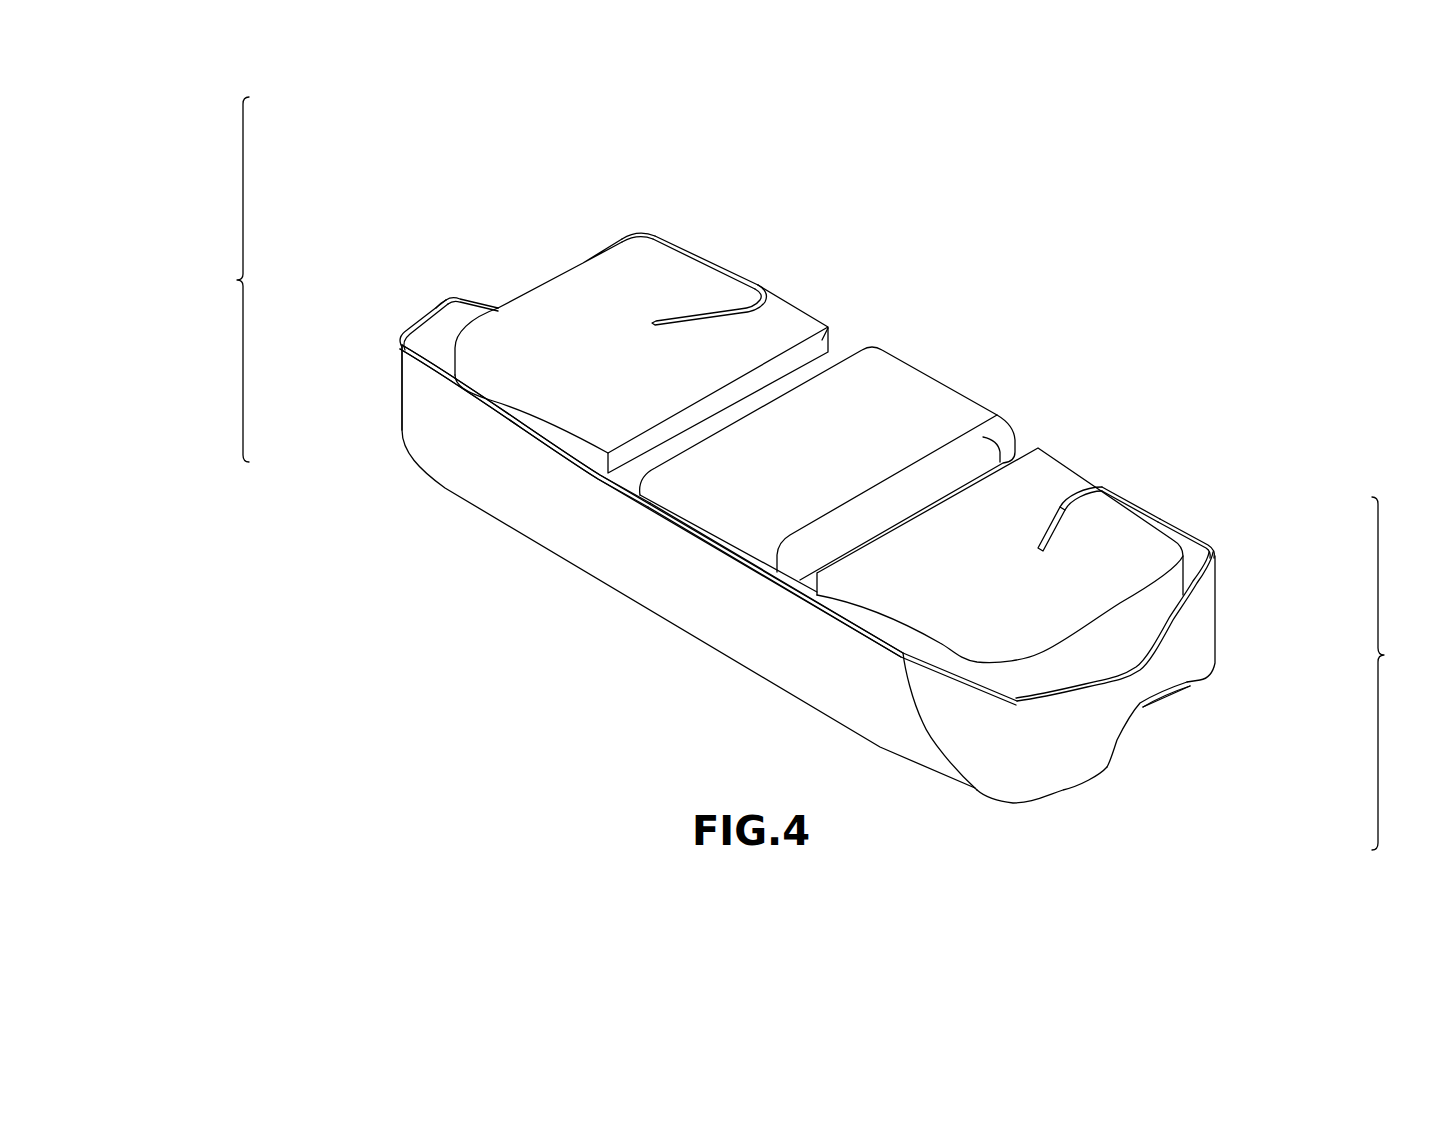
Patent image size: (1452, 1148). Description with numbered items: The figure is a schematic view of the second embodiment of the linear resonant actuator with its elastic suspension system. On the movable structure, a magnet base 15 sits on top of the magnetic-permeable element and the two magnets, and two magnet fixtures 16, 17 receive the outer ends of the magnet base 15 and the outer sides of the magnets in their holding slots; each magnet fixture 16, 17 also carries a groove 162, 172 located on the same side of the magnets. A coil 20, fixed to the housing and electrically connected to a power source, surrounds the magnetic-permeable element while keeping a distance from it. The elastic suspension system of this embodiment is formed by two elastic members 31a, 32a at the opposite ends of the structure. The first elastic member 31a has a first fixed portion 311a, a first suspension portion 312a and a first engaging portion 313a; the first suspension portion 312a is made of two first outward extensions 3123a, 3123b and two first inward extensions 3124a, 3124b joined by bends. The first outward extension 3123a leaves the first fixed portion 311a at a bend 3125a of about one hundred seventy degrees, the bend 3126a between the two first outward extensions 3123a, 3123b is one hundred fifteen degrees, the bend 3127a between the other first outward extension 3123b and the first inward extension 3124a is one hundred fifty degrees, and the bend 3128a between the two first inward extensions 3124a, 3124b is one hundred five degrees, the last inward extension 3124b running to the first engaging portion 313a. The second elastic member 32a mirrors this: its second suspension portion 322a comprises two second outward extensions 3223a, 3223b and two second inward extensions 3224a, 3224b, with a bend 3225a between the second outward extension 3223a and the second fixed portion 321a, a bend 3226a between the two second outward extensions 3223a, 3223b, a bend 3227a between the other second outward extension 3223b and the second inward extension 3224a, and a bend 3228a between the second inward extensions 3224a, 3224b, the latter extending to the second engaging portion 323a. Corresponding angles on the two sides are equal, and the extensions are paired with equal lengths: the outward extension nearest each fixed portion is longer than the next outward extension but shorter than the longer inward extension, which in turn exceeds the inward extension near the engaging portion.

The magnet base 15 is at (824, 354).
The magnet fixture 16 is at (818, 365).
The groove 162 is at (787, 332).
The magnet fixture 17 is at (1042, 487).
The groove 172 is at (1060, 500).
The coil 20 is at (920, 397).
The first fixing seat 31a is at (250, 488).
The first fixed portion 311a is at (505, 486).
The first suspension portion 312a is at (472, 302).
The first engaging portion 313a is at (750, 287).
The first outward extension 3123a is at (437, 381).
The first outward extension 3123b is at (413, 320).
The first inward extension 3124a is at (593, 256).
The first inward extension 3124b is at (700, 247).
The bend 3125a is at (462, 410).
The bend 3126a is at (402, 347).
The bend 3127a is at (452, 300).
The bend 3128a is at (652, 232).
The second fixing seat 32a is at (1338, 477).
The second fixed portion 321a is at (820, 666).
The second suspension portion 322a is at (1170, 670).
The second engaging portion 323a is at (1120, 487).
The second outward extension 3223a is at (973, 747).
The second outward extension 3223b is at (1073, 745).
The second inward extension 3224a is at (1193, 648).
The second inward extension 3224b is at (1160, 513).
The bend 3225a is at (975, 788).
The bend 3226a is at (1020, 770).
The bend 3227a is at (1118, 683).
The bend 3228a is at (1212, 552).